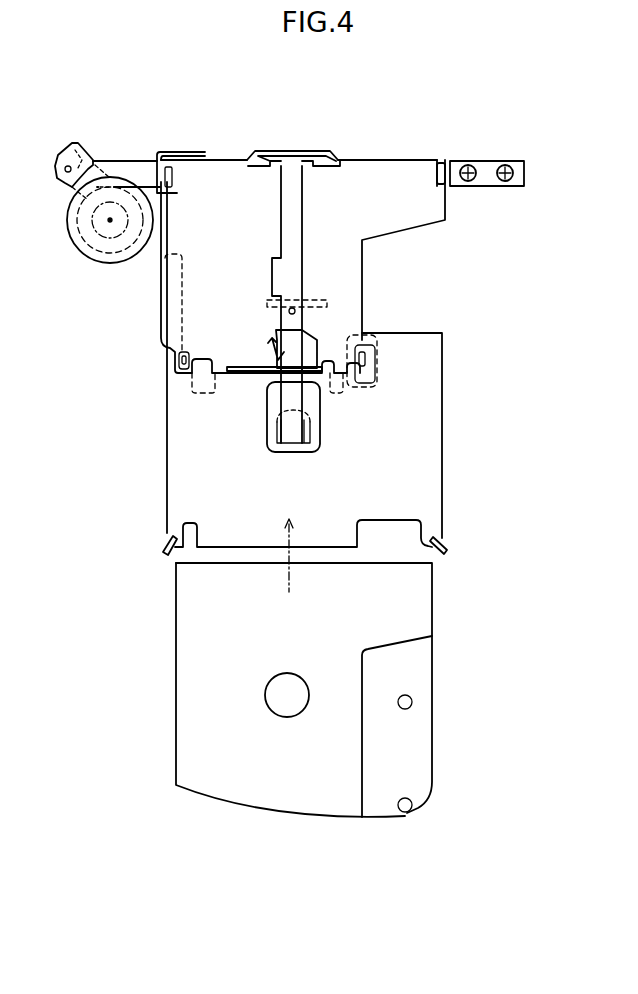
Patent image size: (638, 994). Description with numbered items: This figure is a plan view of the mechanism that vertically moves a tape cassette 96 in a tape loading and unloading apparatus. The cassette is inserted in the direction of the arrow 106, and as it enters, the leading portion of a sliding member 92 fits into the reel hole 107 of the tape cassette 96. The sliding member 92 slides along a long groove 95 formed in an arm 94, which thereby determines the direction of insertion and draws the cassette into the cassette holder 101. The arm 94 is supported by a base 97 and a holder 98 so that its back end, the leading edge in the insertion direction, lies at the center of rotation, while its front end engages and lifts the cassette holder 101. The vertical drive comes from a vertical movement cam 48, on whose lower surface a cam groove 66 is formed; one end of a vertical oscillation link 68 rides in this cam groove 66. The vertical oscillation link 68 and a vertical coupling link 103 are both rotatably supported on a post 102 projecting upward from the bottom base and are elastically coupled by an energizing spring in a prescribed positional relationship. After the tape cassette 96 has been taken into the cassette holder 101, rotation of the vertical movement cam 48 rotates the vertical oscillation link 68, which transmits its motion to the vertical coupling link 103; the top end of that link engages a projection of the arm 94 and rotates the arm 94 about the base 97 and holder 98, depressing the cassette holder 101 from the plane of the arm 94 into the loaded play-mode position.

The vertical movement cam 48 is at (67, 215).
The cam groove 66 is at (80, 240).
The vertical oscillation link 68 is at (72, 186).
The sliding member 92 is at (317, 338).
The arm 94 is at (360, 165).
The long groove 95 is at (292, 150).
The tape cassette 96 is at (422, 663).
The base 97 is at (178, 152).
The holder 98 is at (485, 162).
The cassette holder 101 is at (427, 463).
The post 102 is at (68, 163).
The vertical coupling link 103 is at (117, 160).
The arrow 106 is at (289, 575).
The reel hole 107 is at (292, 717).